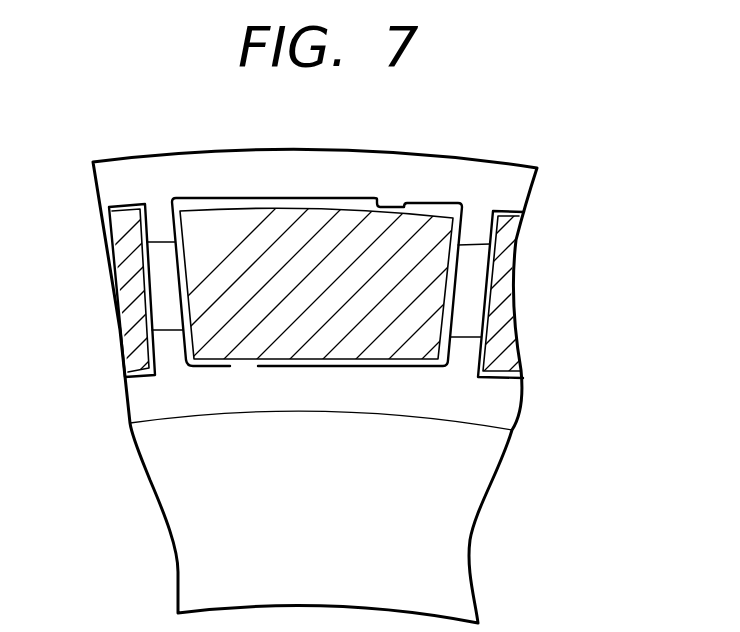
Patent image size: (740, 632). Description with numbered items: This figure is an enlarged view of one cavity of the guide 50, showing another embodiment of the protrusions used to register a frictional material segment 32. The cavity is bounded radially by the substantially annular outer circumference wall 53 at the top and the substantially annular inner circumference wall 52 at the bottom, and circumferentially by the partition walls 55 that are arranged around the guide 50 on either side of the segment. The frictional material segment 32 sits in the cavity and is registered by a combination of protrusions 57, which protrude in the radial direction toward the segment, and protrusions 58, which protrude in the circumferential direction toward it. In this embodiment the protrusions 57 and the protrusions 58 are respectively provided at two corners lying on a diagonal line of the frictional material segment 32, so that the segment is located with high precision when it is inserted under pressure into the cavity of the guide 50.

The guide 50 is at (522, 124).
The outer circumference wall 53 is at (152, 170).
The inner circumference wall 52 is at (147, 393).
The protrusion 57 is at (392, 200).
The frictional material segment 32 is at (203, 260).
The partition wall 55 is at (475, 290).
The protrusion 58 is at (187, 340).